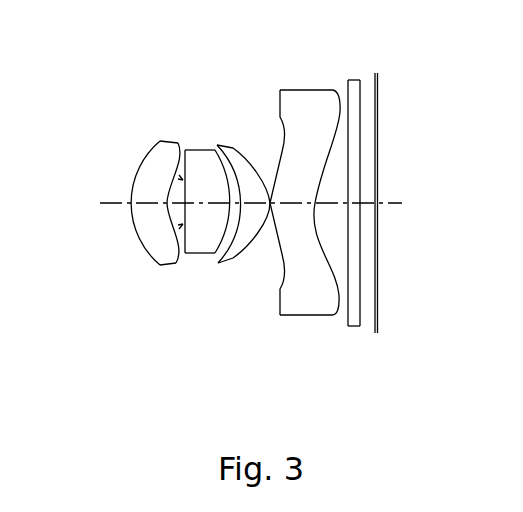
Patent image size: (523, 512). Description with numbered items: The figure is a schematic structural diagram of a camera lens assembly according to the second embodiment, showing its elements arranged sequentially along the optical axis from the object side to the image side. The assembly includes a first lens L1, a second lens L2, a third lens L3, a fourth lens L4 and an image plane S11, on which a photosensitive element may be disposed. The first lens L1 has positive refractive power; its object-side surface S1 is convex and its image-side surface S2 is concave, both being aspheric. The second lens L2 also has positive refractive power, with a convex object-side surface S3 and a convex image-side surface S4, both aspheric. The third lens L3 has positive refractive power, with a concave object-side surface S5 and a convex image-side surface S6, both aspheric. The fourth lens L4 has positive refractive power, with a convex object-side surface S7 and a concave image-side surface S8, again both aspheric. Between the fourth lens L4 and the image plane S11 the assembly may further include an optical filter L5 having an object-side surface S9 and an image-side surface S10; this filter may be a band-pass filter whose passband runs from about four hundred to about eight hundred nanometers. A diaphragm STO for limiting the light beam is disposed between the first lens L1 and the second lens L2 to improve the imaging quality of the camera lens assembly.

The first lens L1 is at (108, 209).
The second lens L2 is at (172, 209).
The third lens L3 is at (245, 209).
The fourth lens L4 is at (325, 209).
The optical filter L5 is at (408, 209).
The diaphragm STO is at (183, 180).
The object-side surface of the first lens S1 is at (131, 203).
The image-side surface of the first lens S2 is at (166, 203).
The object-side surface of the second lens S3 is at (185, 203).
The image-side surface of the second lens S4 is at (230, 203).
The object-side surface of the third lens S5 is at (240, 203).
The image-side surface of the third lens S6 is at (270, 203).
The object-side surface of the fourth lens S7 is at (270, 203).
The image-side surface of the fourth lens S8 is at (315, 203).
The object-side surface of the optical filter S9 is at (348, 203).
The image-side surface of the optical filter S10 is at (360, 203).
The image plane S11 is at (376, 203).